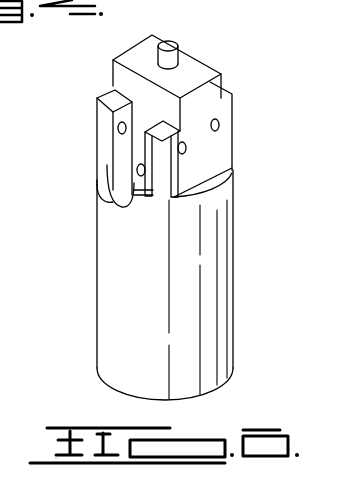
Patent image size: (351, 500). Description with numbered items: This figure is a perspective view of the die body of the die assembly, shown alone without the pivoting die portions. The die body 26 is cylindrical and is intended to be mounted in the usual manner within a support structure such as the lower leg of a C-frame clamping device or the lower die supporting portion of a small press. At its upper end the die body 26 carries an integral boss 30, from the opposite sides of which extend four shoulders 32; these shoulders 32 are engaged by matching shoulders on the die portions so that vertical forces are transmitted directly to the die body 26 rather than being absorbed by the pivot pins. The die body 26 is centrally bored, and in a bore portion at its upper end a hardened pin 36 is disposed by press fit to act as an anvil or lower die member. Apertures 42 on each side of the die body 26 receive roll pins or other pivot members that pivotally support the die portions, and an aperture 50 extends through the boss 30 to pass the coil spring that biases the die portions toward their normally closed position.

The die body 26 is at (115, 288).
The boss 30 is at (217, 83).
The shoulders 32 is at (112, 95).
The hardened pin 36 is at (176, 50).
The apertures 42 is at (115, 142).
The aperture 50 is at (152, 172).